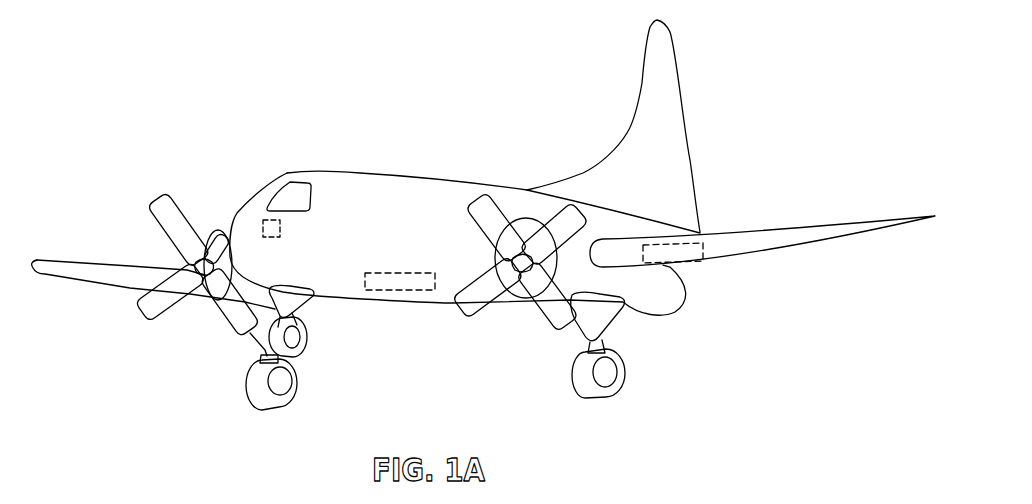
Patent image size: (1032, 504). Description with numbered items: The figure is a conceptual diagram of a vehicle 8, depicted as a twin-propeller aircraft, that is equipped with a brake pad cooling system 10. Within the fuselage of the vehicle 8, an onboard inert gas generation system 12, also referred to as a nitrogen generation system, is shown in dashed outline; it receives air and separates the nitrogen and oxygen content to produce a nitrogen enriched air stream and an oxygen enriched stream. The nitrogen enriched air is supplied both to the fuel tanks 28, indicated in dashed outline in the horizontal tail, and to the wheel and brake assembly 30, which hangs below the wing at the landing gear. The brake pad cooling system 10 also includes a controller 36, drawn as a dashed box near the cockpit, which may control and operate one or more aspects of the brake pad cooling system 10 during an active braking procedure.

The vehicle 8 is at (483, 215).
The brake pad cooling system 10 is at (427, 323).
The onboard inert gas generation system (OBIGGS) 12 is at (386, 276).
The fuel tanks 28 is at (705, 245).
The wheel and brake assembly 30 is at (578, 363).
The controller 36 is at (281, 231).